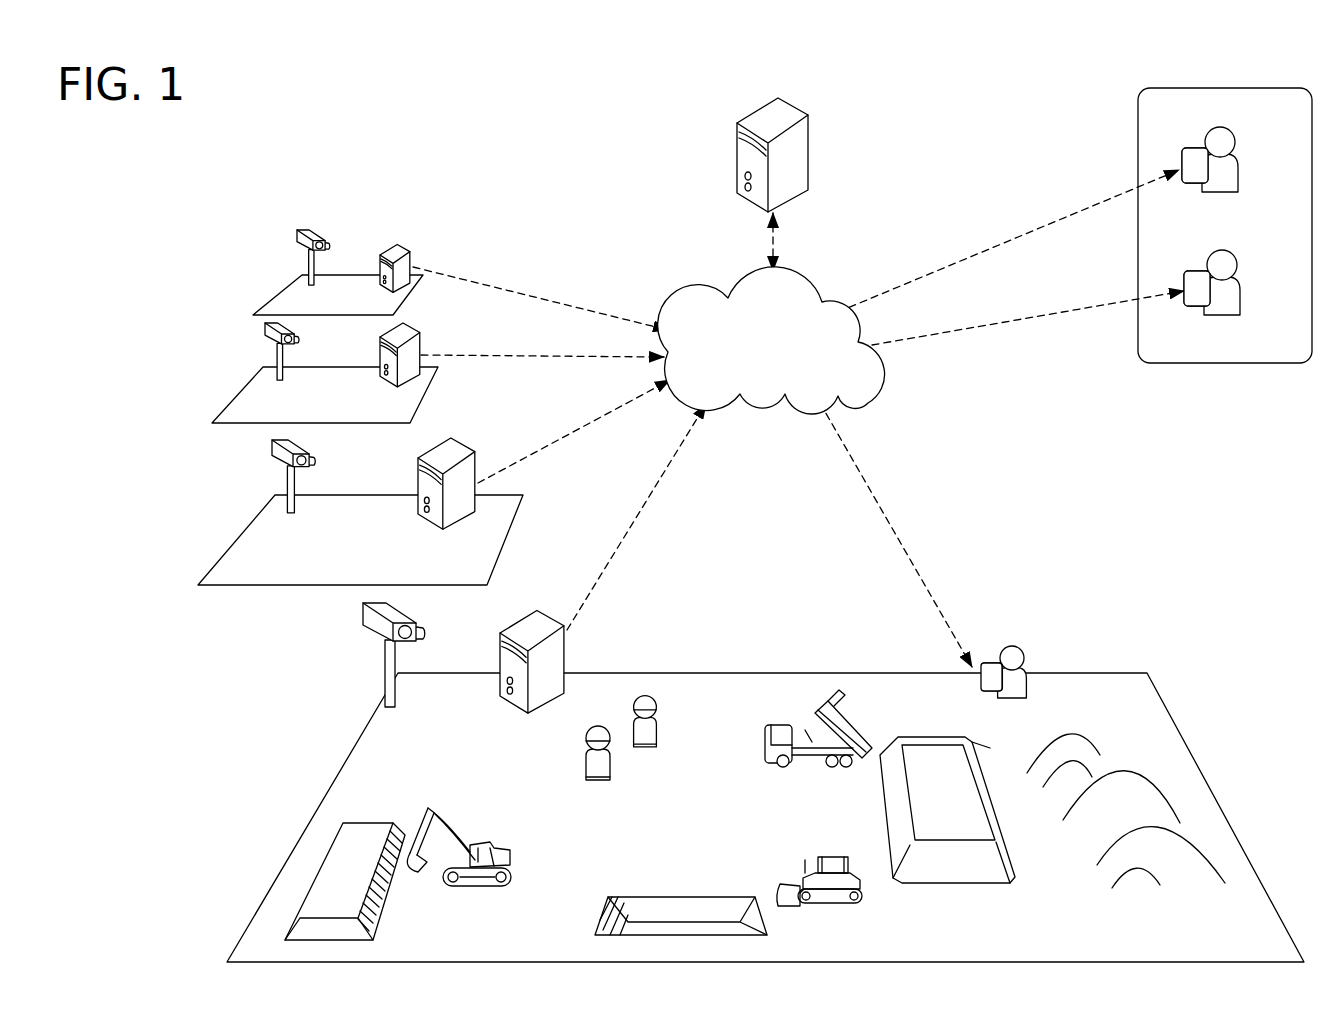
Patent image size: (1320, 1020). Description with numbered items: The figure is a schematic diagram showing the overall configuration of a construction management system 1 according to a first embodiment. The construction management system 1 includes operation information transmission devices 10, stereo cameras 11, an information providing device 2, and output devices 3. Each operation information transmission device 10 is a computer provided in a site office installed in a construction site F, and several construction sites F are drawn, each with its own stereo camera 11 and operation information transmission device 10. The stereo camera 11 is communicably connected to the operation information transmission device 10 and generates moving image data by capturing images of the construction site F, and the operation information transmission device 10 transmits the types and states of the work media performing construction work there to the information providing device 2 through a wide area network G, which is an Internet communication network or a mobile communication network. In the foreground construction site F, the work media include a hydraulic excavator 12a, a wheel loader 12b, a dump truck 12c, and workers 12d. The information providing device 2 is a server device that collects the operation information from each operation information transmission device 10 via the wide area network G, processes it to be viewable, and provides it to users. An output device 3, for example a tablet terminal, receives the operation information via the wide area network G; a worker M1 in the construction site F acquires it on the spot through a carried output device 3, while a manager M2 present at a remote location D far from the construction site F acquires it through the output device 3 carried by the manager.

The construction management system 1 is at (316, 177).
The information providing device 2 is at (743, 115).
The output device 3 is at (1192, 148).
The operation information transmission device 10 is at (400, 248).
The stereo camera 11 is at (298, 233).
The hydraulic excavator 12a is at (487, 841).
The wheel loader 12b is at (845, 908).
The dump truck 12c is at (781, 724).
The workers 12d is at (597, 727).
The construction site F is at (282, 298).
The wide area network G is at (698, 310).
The worker M1 is at (1014, 647).
The manager M2 is at (1240, 158).
The remote location D is at (1220, 365).